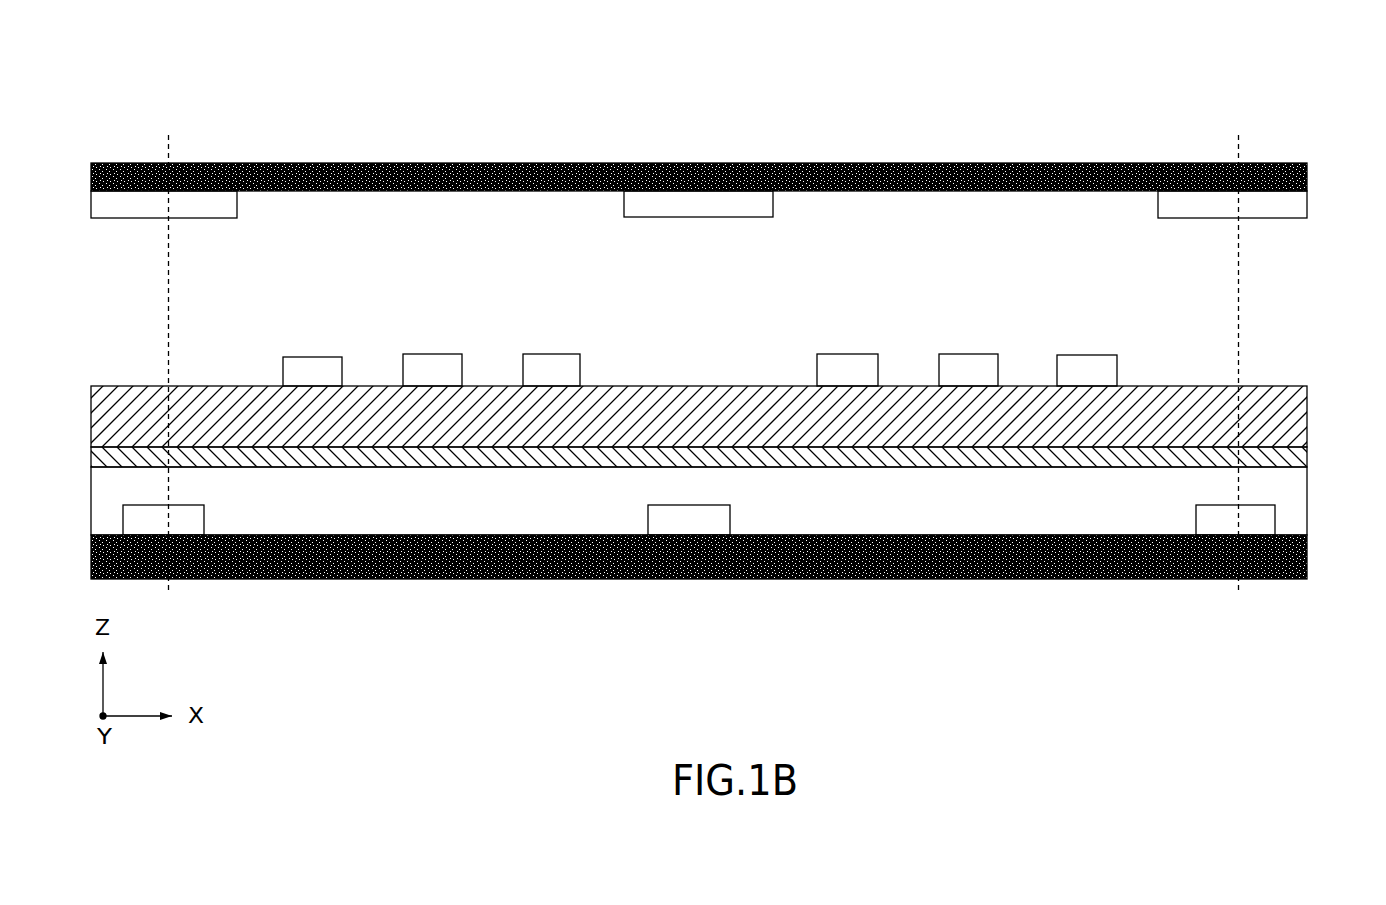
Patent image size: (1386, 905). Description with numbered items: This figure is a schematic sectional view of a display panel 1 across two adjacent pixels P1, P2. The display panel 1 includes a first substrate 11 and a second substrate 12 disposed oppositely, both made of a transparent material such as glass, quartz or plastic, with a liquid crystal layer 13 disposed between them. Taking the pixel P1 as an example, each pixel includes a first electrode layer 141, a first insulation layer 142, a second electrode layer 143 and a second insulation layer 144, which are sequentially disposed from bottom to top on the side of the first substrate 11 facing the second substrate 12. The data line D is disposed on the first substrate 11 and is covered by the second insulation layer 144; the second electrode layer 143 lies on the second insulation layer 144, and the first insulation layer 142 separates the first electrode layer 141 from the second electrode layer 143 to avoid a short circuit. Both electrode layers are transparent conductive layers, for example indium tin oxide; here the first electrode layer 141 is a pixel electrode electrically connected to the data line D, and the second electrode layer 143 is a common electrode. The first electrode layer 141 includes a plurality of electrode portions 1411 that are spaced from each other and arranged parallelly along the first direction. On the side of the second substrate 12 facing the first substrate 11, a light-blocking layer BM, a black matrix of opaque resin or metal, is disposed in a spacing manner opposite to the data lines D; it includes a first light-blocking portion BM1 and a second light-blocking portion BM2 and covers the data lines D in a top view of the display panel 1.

The display panel 1 is at (229, 79).
The first substrate 11 is at (1308, 559).
The second substrate 12 is at (1308, 176).
The liquid crystal layer 13 is at (1258, 282).
The first electrode layer 141 is at (271, 360).
The electrode portions 1411 is at (428, 366).
The first insulation layer 142 is at (1298, 418).
The second electrode layer 143 is at (1300, 453).
The second insulation layer 144 is at (1300, 493).
The light-blocking layer BM is at (1146, 210).
The first light-blocking portion BM1 is at (698, 204).
The second light-blocking portion BM2 is at (164, 204).
The pixel P1 is at (422, 217).
The pixel P2 is at (936, 207).
The data line D is at (699, 520).